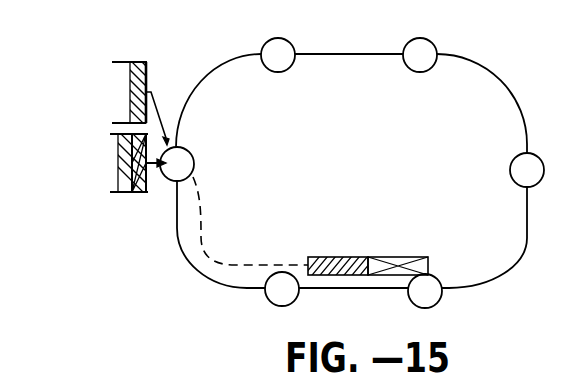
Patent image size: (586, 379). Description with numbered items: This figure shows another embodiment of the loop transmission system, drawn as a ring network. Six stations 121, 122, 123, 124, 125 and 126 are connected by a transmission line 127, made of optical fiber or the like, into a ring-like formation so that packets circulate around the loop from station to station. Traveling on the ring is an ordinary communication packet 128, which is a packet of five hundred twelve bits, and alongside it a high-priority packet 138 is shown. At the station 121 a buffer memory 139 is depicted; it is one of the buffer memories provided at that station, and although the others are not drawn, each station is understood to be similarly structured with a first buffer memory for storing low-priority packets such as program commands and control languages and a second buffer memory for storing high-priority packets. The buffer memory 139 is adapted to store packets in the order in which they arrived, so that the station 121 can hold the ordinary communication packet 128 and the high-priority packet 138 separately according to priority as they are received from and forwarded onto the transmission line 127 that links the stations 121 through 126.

The station 121 is at (175, 182).
The station 122 is at (270, 301).
The station 123 is at (437, 303).
The station 124 is at (539, 182).
The station 125 is at (428, 39).
The station 126 is at (283, 39).
The transmission line 127 is at (507, 265).
The ordinary communication packet 128 is at (420, 257).
The high-priority packet 138 is at (330, 257).
The buffer memory 139 is at (120, 193).